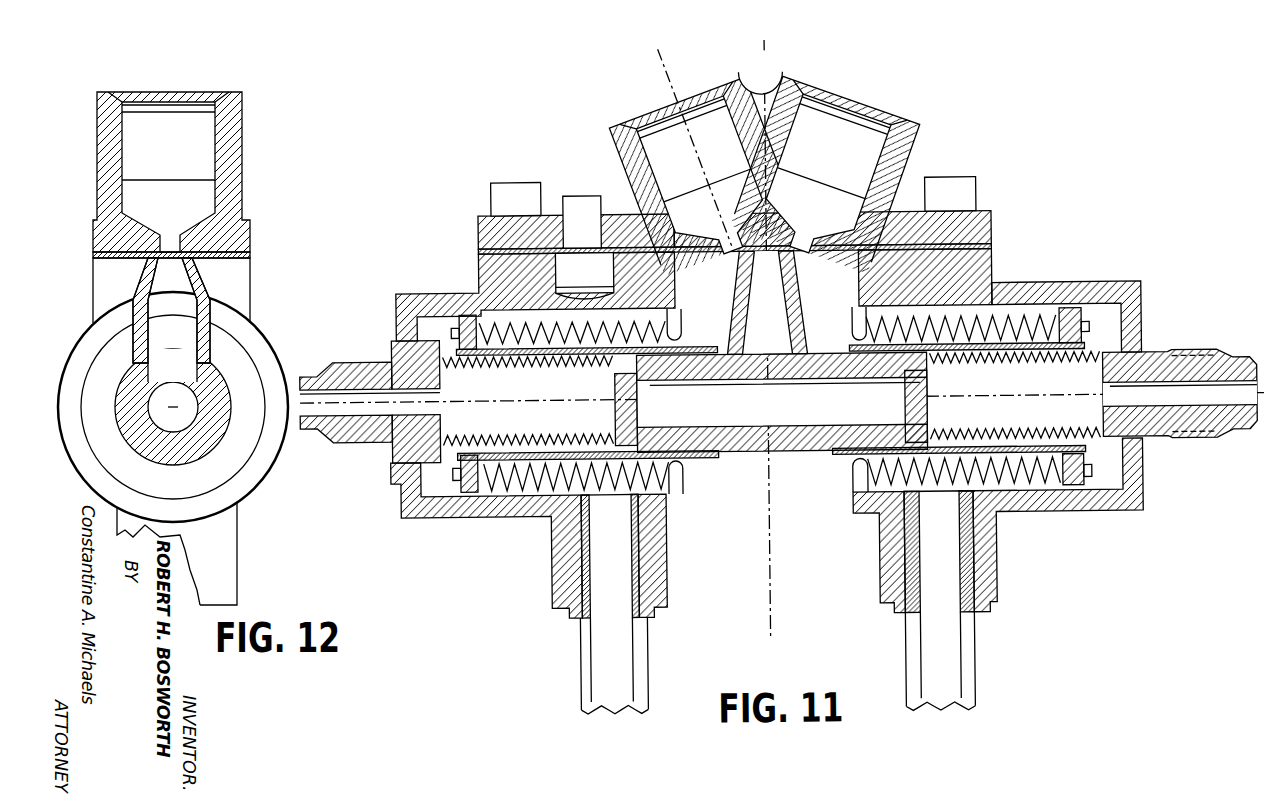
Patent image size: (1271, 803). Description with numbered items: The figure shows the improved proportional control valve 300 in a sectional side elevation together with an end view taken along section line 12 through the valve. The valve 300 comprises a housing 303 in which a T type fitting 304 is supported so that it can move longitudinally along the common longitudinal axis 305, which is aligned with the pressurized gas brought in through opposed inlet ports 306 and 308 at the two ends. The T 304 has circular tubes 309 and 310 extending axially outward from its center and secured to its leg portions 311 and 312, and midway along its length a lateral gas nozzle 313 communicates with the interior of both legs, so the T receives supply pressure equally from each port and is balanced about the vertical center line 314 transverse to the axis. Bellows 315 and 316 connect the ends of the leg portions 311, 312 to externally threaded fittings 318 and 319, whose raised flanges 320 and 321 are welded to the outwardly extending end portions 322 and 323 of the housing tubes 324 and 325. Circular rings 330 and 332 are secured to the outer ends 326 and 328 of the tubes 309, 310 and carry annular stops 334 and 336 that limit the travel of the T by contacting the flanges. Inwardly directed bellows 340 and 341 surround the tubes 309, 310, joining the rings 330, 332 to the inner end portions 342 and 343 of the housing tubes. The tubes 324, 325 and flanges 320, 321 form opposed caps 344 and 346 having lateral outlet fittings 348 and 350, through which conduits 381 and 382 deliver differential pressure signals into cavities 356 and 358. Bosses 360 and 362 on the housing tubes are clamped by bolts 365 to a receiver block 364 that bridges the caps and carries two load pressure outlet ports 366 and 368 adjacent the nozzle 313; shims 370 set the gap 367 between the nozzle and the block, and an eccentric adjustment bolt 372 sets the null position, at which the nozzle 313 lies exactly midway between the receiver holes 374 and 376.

In FIG. 11, the section line 12— 12 is at (693, 55).
In FIG. 11, the proportional control valve 300 is at (1080, 165).
In FIG. 11, the housing 303 is at (1127, 287).
In FIG. 11, the T type fitting 304 is at (797, 453).
In FIG. 11, the longitudinal axis 305 is at (837, 401).
In FIG. 11, the inlet port 306 is at (312, 365).
In FIG. 11, the inlet port 308 is at (1195, 386).
In FIG. 11, the circular tube 309 is at (700, 458).
In FIG. 11, the circular tube 310 is at (845, 465).
In FIG. 11, the leg portion 311 is at (647, 421).
In FIG. 11, the leg portion 312 is at (887, 424).
In FIG. 11, the gas nozzle 313 is at (806, 330).
In FIG. 12, the gas nozzle 313 is at (207, 289).
In FIG. 11, the vertical center line 314 is at (770, 52).
In FIG. 11, the bellows 315 is at (530, 366).
In FIG. 11, the bellows 316 is at (983, 366).
In FIG. 11, the externally threaded fitting 318 is at (348, 356).
In FIG. 11, the externally threaded fitting 319 is at (1177, 354).
In FIG. 11, the flange 320 is at (390, 460).
In FIG. 11, the flange 321 is at (1148, 467).
In FIG. 11, the end portion 322 is at (428, 515).
In FIG. 11, the end portion 323 is at (1139, 516).
In FIG. 11, the tube 324 is at (478, 515).
In FIG. 12, the tube 324 is at (253, 488).
In FIG. 11, the tube 325 is at (1078, 517).
In FIG. 11, the outwardly extending end 326 is at (436, 398).
In FIG. 11, the outwardly extending end 328 is at (1103, 394).
In FIG. 11, the circular ring 330 is at (448, 296).
In FIG. 11, the circular ring 332 is at (1068, 312).
In FIG. 11, the annular stop 334 is at (452, 329).
In FIG. 11, the annular stop 336 is at (1090, 327).
In FIG. 11, the inwardly directed bellows 340 is at (508, 333).
In FIG. 11, the inwardly directed bellows 341 is at (1010, 323).
In FIG. 11, the inner end portion 342 is at (676, 300).
In FIG. 11, the inner end portion 343 is at (867, 312).
In FIG. 11, the cap 344 is at (400, 513).
In FIG. 11, the cap 346 is at (1142, 505).
In FIG. 11, the lateral outlet fitting 348 is at (550, 587).
In FIG. 11, the lateral outlet fitting 350 is at (996, 593).
In FIG. 12, the lateral outlet fitting 350 is at (233, 553).
In FIG. 11, the cavity 356 is at (540, 490).
In FIG. 11, the cavity 358 is at (1010, 488).
In FIG. 11, the boss 360 is at (480, 258).
In FIG. 11, the boss 362 is at (995, 268).
In FIG. 12, the boss 362 is at (252, 273).
In FIG. 11, the receiver block 364 is at (995, 222).
In FIG. 12, the receiver block 364 is at (242, 148).
In FIG. 11, the bolt 365 is at (507, 180).
In FIG. 11, the load pressure outlet port 366 is at (645, 100).
In FIG. 11, the gap 367 is at (857, 250).
In FIG. 12, the gap 367 is at (250, 254).
In FIG. 11, the load pressure outlet port 368 is at (857, 103).
In FIG. 12, the load pressure outlet port 368 is at (190, 88).
In FIG. 11, the shim 370 is at (997, 247).
In FIG. 11, the eccentric adjustment bolt 372 is at (580, 194).
In FIG. 11, the receiver hole 374 is at (639, 275).
In FIG. 11, the receiver hole 376 is at (795, 249).
In FIG. 12, the receiver hole 376 is at (182, 238).
In FIG. 11, the conduit 381 is at (587, 671).
In FIG. 11, the conduit 382 is at (965, 675).